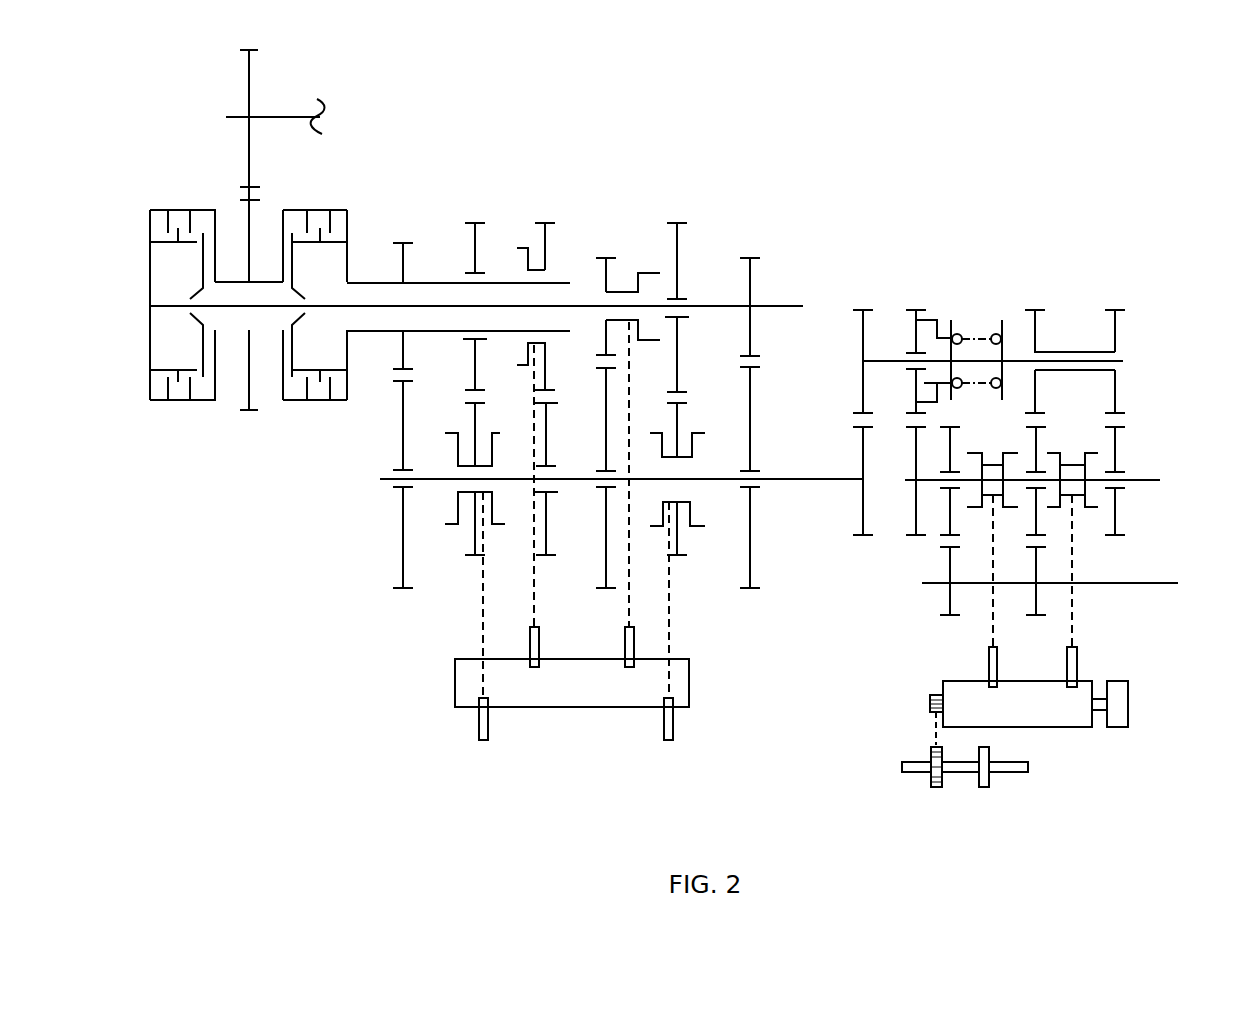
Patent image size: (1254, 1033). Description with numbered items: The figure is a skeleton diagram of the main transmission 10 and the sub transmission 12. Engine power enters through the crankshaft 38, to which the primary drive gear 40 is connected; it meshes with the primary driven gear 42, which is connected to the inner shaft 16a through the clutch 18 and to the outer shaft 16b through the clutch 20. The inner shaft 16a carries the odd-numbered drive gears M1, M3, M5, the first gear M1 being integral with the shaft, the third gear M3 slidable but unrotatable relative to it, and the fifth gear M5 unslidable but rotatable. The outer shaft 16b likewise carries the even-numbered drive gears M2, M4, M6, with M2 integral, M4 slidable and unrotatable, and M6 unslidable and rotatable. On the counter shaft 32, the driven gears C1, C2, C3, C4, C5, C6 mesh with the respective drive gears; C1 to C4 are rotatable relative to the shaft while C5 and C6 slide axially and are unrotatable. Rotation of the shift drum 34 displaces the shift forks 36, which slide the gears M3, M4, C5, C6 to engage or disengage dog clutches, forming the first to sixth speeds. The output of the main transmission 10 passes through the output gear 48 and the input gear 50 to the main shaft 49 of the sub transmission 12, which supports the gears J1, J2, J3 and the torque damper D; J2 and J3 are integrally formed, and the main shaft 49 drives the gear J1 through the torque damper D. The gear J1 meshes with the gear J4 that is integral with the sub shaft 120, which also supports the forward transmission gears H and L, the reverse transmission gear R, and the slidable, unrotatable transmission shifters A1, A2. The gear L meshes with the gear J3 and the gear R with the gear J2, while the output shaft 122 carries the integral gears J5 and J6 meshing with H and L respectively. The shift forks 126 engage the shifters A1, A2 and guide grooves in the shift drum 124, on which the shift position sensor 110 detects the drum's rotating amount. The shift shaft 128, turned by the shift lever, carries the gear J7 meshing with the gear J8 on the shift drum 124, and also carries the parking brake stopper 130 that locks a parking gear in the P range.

The main transmission 10 is at (134, 129).
The sub transmission 12 is at (1176, 272).
The inner shaft 16a is at (782, 300).
The outer shaft 16b is at (557, 283).
The clutch 18 is at (170, 206).
The clutch 20 is at (328, 206).
The counter shaft 32 is at (790, 482).
The shift drum 34 is at (567, 707).
The shift forks 36 is at (625, 645).
The crankshaft 38 is at (283, 117).
The primary drive gear 40 is at (252, 155).
The primary driven gear 42 is at (252, 225).
The output gear 48 is at (862, 517).
The main shaft 49 is at (866, 364).
The input gear 50 is at (862, 336).
The shift position sensor 110 is at (1128, 692).
The sub shaft 120 is at (1140, 483).
The output shaft 122 is at (1140, 586).
The shift drum 124 is at (1037, 727).
The shift forks 126 is at (1067, 672).
The shift shaft 128 is at (915, 762).
The parking brake stopper 130 is at (992, 785).
The first transmission drive gear M1 is at (755, 282).
The second transmission drive gear M2 is at (400, 275).
The third transmission drive gear M3 is at (612, 276).
The fourth transmission drive gear M4 is at (548, 235).
The fifth transmission drive gear M5 is at (682, 260).
The sixth transmission drive gear M6 is at (478, 232).
The first transmission driven gear C1 is at (752, 438).
The second transmission driven gear C2 is at (403, 428).
The third transmission driven gear C3 is at (605, 400).
The fourth transmission driven gear C4 is at (548, 436).
The fifth transmission driven gear C5 is at (680, 440).
The sixth transmission driven gear C6 is at (475, 420).
The gear J1 is at (912, 332).
The gear J2 is at (1118, 335).
The gear J3 is at (1040, 336).
The gear J4 is at (915, 520).
The gear J5 is at (948, 563).
The gear J6 is at (1035, 576).
The gear J7 is at (930, 785).
The gear J8 is at (930, 698).
The torque damper D is at (970, 316).
The forward transmission gear H is at (948, 471).
The forward transmission gear L is at (1040, 440).
The reverse transmission gear R is at (1118, 452).
The transmission shifter A1 is at (992, 454).
The transmission shifter A2 is at (1068, 462).